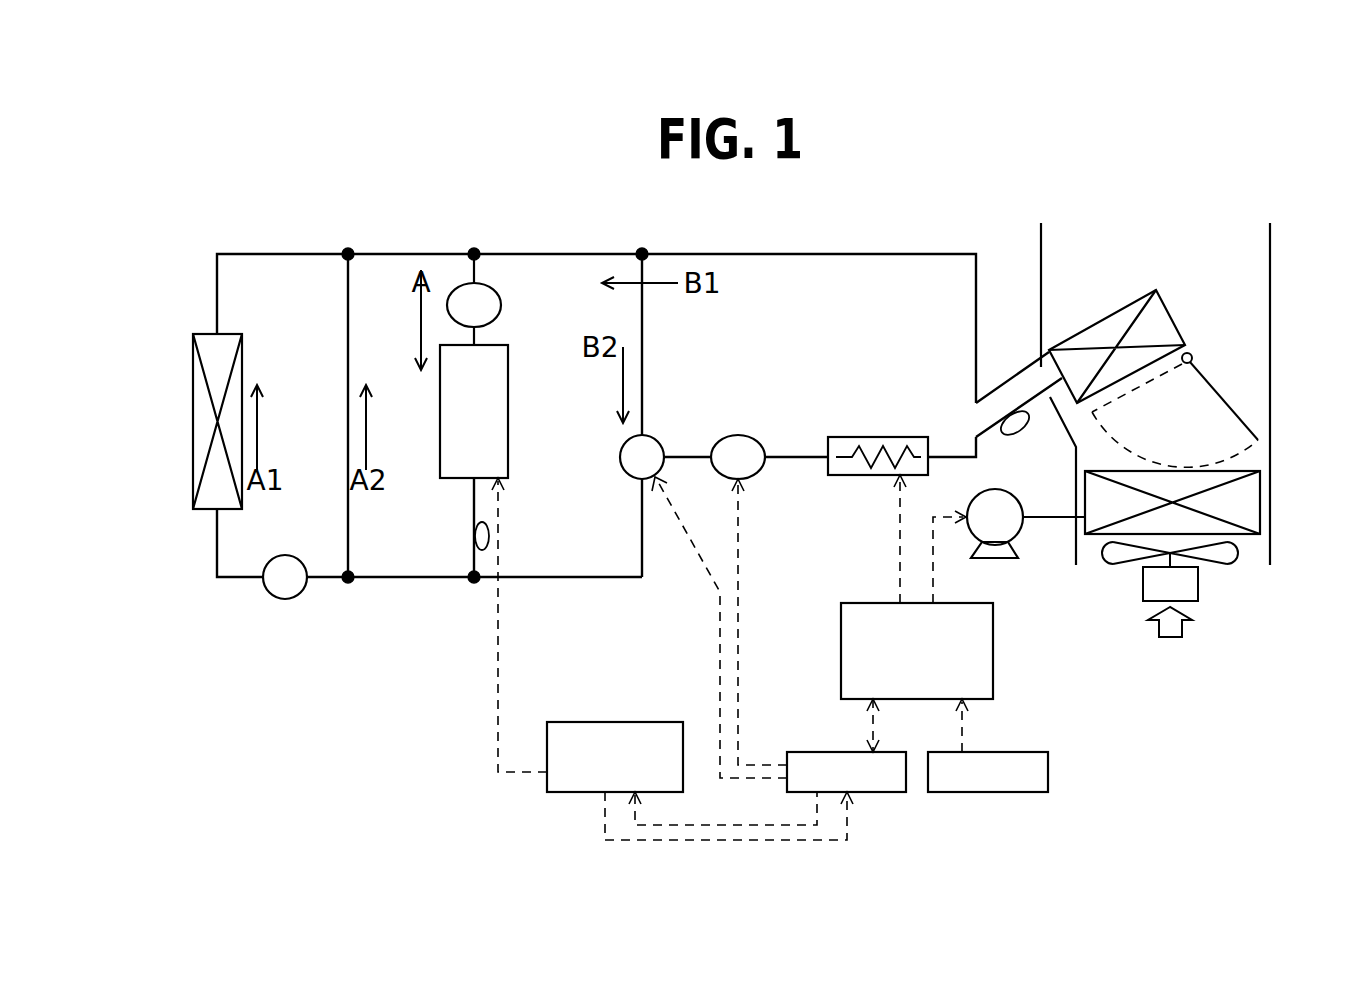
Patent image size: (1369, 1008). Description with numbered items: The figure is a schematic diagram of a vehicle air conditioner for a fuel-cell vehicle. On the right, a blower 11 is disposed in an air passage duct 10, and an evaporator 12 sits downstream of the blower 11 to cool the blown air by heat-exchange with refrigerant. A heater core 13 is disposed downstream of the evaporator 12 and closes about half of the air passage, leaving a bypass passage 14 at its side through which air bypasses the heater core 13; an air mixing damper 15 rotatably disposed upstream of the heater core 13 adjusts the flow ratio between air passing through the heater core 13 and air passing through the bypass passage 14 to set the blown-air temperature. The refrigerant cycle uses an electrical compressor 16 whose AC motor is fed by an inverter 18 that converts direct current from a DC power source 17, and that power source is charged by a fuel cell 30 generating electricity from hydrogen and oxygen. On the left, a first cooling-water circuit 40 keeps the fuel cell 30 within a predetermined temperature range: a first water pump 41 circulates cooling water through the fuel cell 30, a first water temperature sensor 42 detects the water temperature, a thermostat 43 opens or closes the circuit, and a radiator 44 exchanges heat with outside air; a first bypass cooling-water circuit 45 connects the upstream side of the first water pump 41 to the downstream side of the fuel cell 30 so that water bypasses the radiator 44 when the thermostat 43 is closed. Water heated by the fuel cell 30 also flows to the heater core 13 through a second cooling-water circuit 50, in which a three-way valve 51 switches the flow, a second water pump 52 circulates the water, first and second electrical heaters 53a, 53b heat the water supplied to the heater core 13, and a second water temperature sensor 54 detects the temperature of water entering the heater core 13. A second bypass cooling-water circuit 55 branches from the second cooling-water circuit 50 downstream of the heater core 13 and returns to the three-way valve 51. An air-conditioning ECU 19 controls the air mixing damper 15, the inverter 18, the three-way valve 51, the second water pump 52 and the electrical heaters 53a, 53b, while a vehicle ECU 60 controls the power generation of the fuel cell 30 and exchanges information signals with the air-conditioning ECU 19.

The air passage duct 10 is at (1270, 252).
The blower 11 is at (1222, 563).
The evaporator 12 is at (1260, 500).
The heater core 13 is at (1080, 323).
The bypass passage 14 is at (1232, 318).
The air mixing damper 15 is at (1245, 395).
The electrical compressor 16 is at (1019, 536).
The DC power source 17 is at (1027, 792).
The inverter 18 is at (993, 652).
The air-conditioning ECU 19 is at (886, 792).
The fuel cell 30 is at (444, 480).
The first cooling-water circuit 40 is at (409, 254).
The first water pump 41 is at (500, 305).
The first water temperature sensor 42 is at (488, 548).
The thermostat 43 is at (282, 588).
The radiator 44 is at (193, 397).
The first bypass cooling-water circuit 45 is at (348, 332).
The second cooling-water circuit 50 is at (540, 254).
The three-way valve 51 is at (620, 467).
The second water pump 52 is at (756, 476).
The first electrical heater 53a is at (895, 418).
The second electrical heater 53b is at (877, 437).
The second water temperature sensor 54 is at (1022, 433).
The second bypass cooling-water circuit 55 is at (642, 323).
The vehicle ECU 60 is at (585, 722).